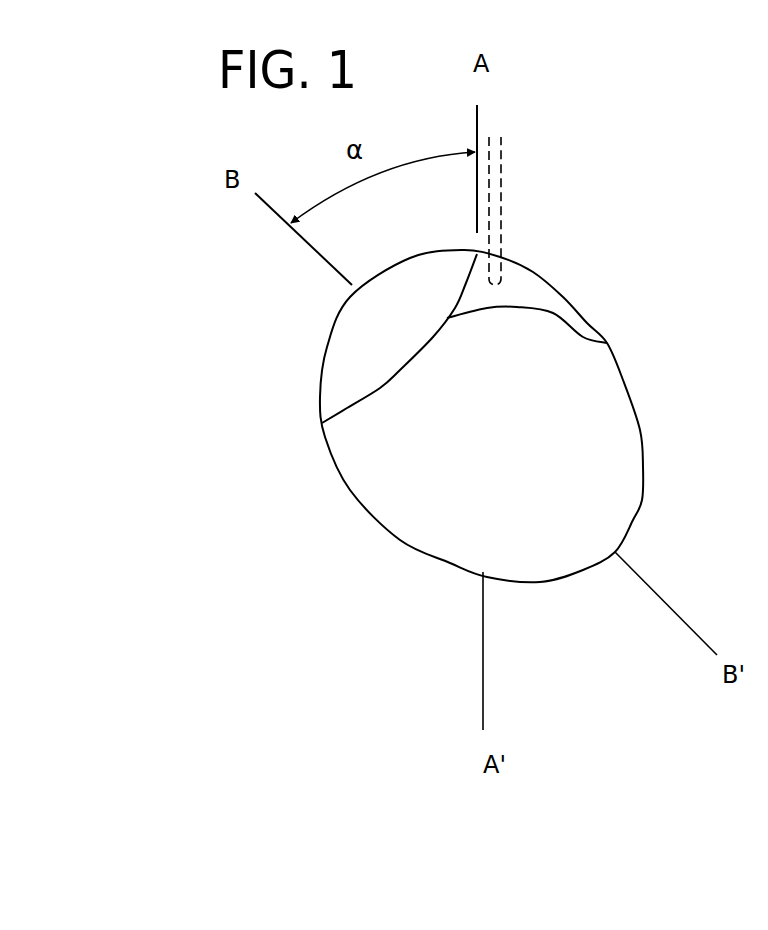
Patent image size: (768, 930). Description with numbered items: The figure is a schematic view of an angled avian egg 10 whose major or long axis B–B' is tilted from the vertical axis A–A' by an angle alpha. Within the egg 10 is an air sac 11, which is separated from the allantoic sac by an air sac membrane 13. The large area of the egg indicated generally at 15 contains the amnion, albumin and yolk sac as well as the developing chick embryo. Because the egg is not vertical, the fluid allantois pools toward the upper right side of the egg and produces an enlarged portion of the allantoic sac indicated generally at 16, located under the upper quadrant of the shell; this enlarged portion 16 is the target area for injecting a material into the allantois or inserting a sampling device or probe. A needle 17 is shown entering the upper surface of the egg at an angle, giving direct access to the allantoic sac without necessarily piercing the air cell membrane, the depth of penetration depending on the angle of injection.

The egg 10 is at (643, 438).
The air sac 11 is at (347, 348).
The air sac membrane 13 is at (347, 408).
The large area of the egg 15 is at (532, 447).
The enlarged portion of the allantoic sac 16 is at (540, 302).
The needle 17 is at (502, 193).